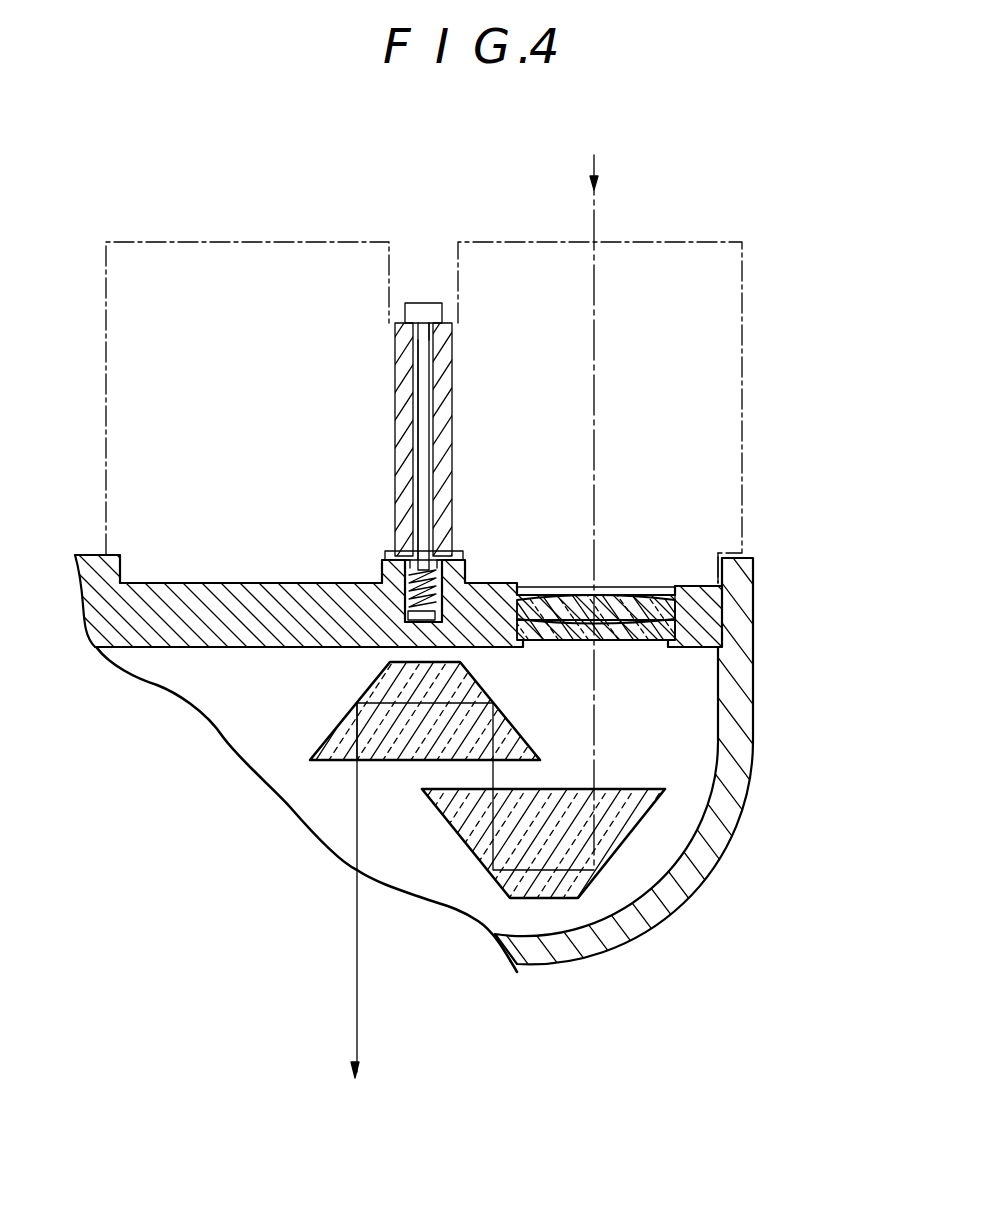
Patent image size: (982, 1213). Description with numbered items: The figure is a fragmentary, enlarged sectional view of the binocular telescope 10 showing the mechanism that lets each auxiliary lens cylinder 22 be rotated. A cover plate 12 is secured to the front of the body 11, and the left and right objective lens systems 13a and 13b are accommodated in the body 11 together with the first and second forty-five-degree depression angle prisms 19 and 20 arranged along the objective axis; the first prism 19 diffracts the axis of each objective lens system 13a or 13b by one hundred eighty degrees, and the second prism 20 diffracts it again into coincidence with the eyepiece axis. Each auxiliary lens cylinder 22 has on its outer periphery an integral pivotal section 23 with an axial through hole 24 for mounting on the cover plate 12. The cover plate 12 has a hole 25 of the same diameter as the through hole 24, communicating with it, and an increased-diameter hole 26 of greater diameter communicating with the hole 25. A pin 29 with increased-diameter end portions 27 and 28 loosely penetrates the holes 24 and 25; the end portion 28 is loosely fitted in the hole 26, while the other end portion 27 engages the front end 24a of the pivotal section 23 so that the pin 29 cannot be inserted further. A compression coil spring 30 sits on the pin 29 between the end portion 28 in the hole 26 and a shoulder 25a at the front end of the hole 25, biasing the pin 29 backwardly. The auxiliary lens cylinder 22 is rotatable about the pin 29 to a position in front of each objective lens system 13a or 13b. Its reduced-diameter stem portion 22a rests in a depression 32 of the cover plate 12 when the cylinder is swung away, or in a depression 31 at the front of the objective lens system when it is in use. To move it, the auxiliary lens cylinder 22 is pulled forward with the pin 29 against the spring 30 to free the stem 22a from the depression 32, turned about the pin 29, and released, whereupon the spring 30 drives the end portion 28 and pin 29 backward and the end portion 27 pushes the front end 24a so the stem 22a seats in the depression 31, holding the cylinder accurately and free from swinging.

The binocular telescope 10 is at (765, 467).
The body 11 is at (757, 748).
The cover plate 12 is at (205, 640).
The left objective lens system 13a is at (628, 598).
The right objective lens system 13b is at (633, 641).
The first 45-degree depression angle prism 19 is at (637, 827).
The second 45-degree depression angle prism 20 is at (524, 741).
The auxiliary lens cylinder 22 is at (239, 280).
The reduced-diameter stem portion 22a is at (116, 570).
The pivotal section 23 is at (448, 381).
The through hole 24 is at (413, 406).
The front end of the pivotal section 24a is at (434, 304).
The hole 25 is at (432, 556).
The shoulder 25a is at (403, 572).
The increased-diameter hole 26 is at (405, 602).
The increased-diameter end portion 27 is at (416, 304).
The increased-diameter end portion 28 is at (427, 622).
The pin 29 is at (424, 465).
The compression coil spring 30 is at (445, 566).
The depression 31 is at (738, 620).
The depression 32 is at (202, 582).